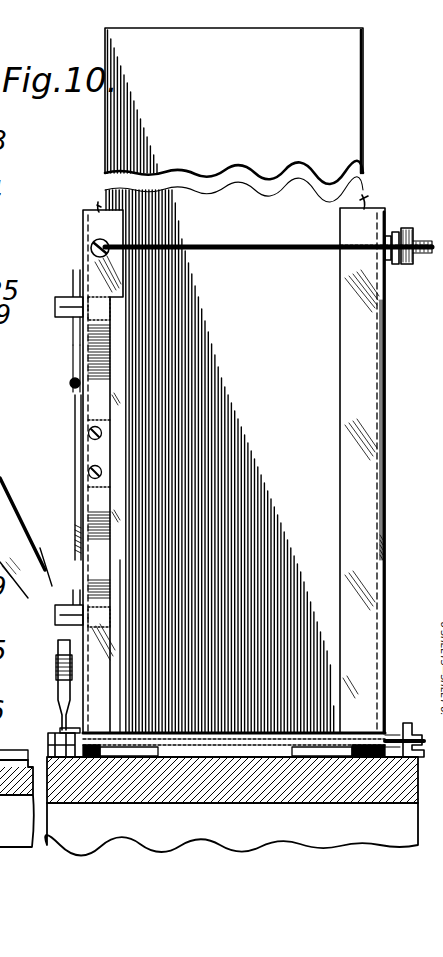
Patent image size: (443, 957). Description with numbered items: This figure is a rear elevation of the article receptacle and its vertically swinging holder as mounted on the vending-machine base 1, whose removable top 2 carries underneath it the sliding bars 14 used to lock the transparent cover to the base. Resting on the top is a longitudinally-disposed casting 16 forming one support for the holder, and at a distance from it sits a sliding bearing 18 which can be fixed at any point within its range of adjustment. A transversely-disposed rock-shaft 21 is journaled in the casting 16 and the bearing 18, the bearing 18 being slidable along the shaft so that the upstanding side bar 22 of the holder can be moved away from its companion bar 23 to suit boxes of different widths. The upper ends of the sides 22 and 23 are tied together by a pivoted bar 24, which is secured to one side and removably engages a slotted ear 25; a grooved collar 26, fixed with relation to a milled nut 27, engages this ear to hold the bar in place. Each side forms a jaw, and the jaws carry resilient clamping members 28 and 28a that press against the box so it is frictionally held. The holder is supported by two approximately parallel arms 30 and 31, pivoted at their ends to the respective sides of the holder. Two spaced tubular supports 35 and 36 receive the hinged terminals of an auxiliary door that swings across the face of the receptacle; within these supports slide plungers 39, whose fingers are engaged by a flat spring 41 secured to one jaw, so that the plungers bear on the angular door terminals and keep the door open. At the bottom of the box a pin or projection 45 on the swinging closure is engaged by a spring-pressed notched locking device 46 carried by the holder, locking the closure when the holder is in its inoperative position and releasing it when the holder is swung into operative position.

The base 1 is at (231, 806).
The removable top 2 is at (205, 783).
The sliding bars 14 is at (52, 793).
The longitudinally-disposed casting 16 is at (50, 752).
The sliding bearing 18 is at (417, 757).
The rock-shaft 21 is at (390, 736).
The upstanding side bar 22 is at (85, 257).
The companion side bar 23 is at (386, 296).
The pivoted bar 24 is at (240, 245).
The slotted ear 25 is at (388, 230).
The grooved collar 26 is at (397, 262).
The milled nut 27 is at (405, 232).
The resilient clamping member 28 is at (98, 208).
The resilient clamping member 28a is at (363, 207).
The arm 30 is at (5, 497).
The arm 31 is at (387, 520).
The tubular support 35 is at (57, 650).
The tubular support 36 is at (57, 309).
The plungers 39 is at (70, 322).
The flat spring 41 is at (72, 386).
The pin or projection 45 is at (66, 711).
The notched locking device 46 is at (60, 681).